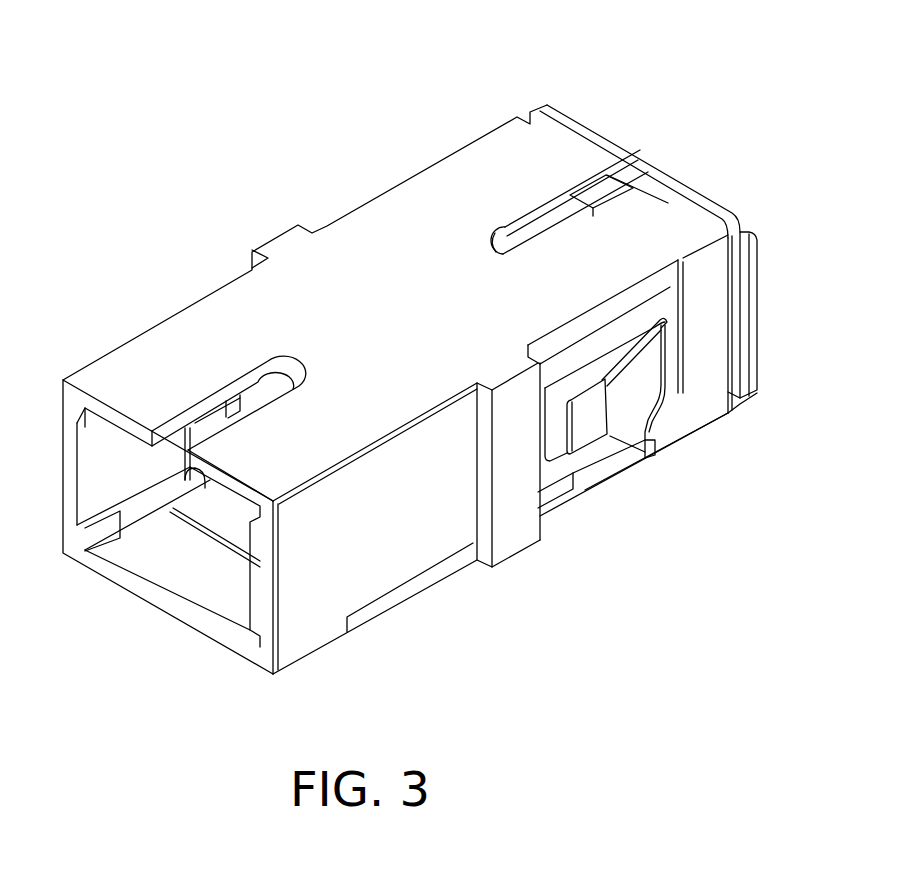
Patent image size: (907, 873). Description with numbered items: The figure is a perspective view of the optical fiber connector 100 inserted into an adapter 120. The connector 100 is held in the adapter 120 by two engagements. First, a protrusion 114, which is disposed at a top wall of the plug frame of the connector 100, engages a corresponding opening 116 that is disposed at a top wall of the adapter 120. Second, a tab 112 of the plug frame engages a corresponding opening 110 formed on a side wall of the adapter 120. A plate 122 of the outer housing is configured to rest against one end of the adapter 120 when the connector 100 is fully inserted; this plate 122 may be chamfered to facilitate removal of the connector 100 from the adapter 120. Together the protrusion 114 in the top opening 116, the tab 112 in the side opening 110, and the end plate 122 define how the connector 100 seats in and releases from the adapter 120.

The connector 100 is at (458, 350).
The opening 110 is at (585, 463).
The tab 112 is at (597, 417).
The protrusion 114 is at (553, 213).
The opening 116 is at (597, 186).
The adapter 120 is at (232, 325).
The plate 122 is at (736, 294).